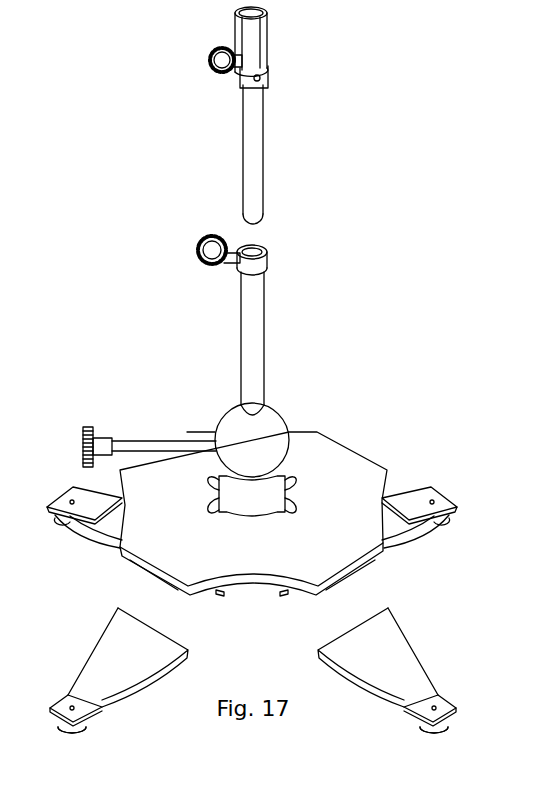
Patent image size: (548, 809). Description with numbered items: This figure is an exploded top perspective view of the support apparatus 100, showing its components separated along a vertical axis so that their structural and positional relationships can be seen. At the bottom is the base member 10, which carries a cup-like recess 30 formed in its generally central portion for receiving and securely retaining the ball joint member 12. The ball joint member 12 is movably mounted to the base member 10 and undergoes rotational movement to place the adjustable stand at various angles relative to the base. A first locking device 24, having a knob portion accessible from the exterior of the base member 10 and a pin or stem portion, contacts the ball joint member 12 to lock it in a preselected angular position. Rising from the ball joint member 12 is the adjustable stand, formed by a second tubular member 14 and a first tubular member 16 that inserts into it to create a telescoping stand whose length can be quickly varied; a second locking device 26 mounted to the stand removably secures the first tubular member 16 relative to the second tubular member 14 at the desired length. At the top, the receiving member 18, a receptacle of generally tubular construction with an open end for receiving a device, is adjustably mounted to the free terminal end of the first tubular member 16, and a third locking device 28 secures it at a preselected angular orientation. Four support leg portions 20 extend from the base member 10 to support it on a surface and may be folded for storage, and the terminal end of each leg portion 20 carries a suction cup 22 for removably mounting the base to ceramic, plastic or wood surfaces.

The support apparatus 100 is at (350, 116).
The base member 10 is at (347, 458).
The ball joint member 12 is at (277, 420).
The second tubular member 14 is at (264, 318).
The first tubular member 16 is at (263, 150).
The receiving member 18 is at (268, 47).
The support leg portion 20 is at (105, 513).
The suction cup 22 is at (85, 733).
The first locking device 24 is at (83, 427).
The second locking device 26 is at (195, 249).
The third locking device 28 is at (212, 58).
The cup-like recess 30 is at (243, 512).